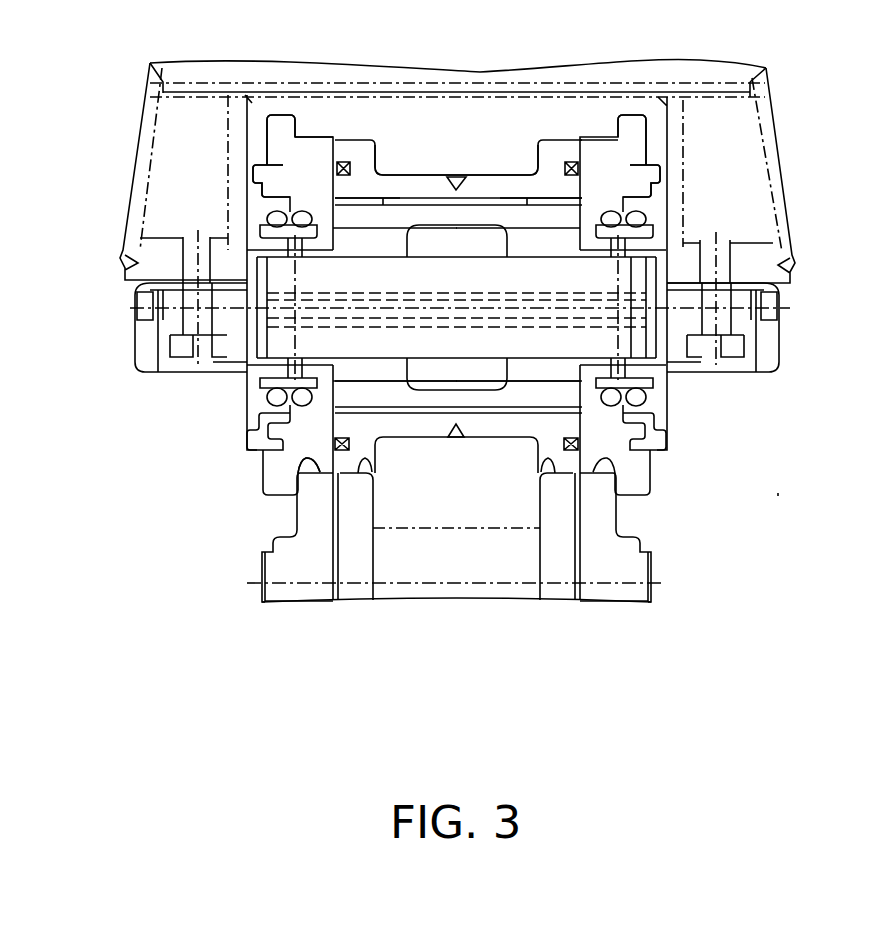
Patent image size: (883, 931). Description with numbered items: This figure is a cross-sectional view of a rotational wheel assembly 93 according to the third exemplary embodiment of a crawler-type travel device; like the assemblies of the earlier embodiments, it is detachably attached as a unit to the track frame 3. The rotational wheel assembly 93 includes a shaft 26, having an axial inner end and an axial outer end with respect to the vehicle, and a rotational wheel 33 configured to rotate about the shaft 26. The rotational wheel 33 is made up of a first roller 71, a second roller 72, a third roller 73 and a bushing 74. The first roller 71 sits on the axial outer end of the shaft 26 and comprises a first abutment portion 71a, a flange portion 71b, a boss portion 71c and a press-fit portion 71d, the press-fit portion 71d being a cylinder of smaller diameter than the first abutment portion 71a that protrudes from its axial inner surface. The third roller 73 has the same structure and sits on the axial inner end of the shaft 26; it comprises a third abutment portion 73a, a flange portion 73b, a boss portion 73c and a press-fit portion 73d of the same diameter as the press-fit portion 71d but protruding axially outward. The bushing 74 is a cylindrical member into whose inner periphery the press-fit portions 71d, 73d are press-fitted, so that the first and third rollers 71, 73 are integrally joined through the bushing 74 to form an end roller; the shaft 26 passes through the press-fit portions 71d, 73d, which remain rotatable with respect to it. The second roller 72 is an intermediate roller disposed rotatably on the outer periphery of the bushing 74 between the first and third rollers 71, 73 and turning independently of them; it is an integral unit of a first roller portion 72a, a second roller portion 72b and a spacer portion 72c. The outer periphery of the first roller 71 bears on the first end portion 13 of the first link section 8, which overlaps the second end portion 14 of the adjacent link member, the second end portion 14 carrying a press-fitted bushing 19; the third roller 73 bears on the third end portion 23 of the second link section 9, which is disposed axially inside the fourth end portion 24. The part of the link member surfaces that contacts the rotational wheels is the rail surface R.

The track frame 3 is at (140, 134).
The first link section 8 is at (593, 617).
The second link section 9 is at (338, 615).
The first end portion 13 is at (613, 512).
The second end portion 14 is at (560, 497).
The bushing 19 is at (472, 592).
The third end portion 23 is at (313, 508).
The fourth end portion 24 is at (365, 502).
The shaft 26 is at (455, 345).
The rotational wheel 33 is at (533, 112).
The first roller 71 is at (605, 247).
The first abutment portion 71a is at (592, 142).
The flange portion 71b is at (640, 110).
The boss portion 71c is at (651, 188).
The press-fit portion 71d is at (525, 224).
The second roller 72 is at (465, 248).
The first roller portion 72a is at (555, 142).
The second roller portion 72b is at (357, 143).
The spacer portion 72c is at (460, 176).
The third roller 73 is at (311, 247).
The third abutment portion 73a is at (318, 137).
The flange portion 73b is at (278, 116).
The boss portion 73c is at (267, 185).
The press-fit portion 73d is at (400, 210).
The bushing 74 is at (440, 210).
The rotational wheel assembly 93 is at (778, 495).
The rail surface R is at (319, 455).